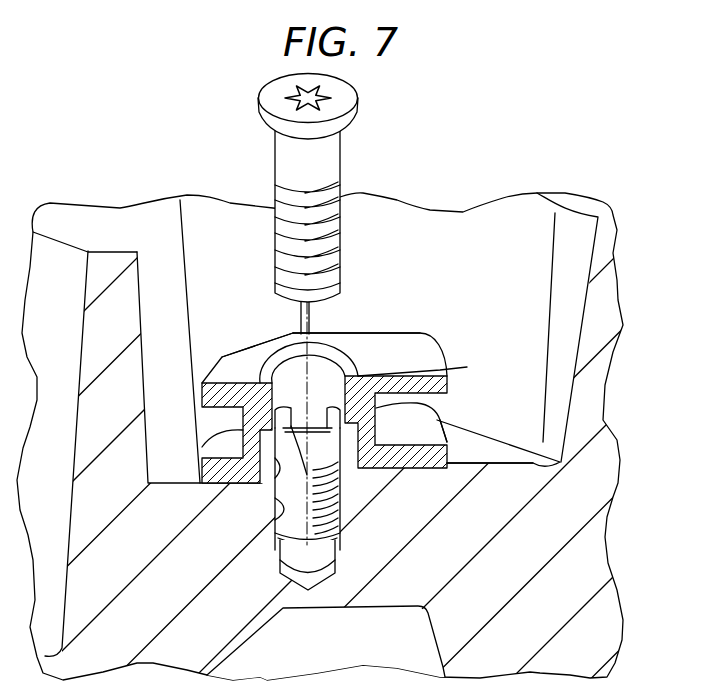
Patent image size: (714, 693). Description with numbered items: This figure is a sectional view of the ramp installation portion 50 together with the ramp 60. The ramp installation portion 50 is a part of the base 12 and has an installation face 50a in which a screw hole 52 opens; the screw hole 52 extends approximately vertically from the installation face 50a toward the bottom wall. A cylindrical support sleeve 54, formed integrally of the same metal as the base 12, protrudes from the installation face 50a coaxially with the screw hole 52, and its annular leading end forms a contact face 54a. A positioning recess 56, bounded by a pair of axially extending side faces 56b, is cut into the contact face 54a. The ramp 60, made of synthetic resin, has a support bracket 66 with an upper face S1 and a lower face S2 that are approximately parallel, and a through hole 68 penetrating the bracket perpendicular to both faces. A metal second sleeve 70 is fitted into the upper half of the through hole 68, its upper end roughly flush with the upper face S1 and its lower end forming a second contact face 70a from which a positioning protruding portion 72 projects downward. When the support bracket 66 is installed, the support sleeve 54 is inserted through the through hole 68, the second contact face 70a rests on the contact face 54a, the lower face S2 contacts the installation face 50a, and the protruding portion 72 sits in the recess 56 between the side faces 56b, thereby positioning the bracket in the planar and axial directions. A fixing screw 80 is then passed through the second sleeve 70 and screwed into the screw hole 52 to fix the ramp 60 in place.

The base 12 is at (160, 243).
The ramp installation portion 50 is at (493, 483).
The installation face 50a is at (470, 447).
The screw hole 52 is at (275, 520).
The support sleeve 54 is at (275, 475).
The contact face 54a is at (428, 407).
The positioning recess 56 is at (288, 431).
The side face 56b is at (435, 368).
The ramp 60 is at (224, 338).
The support bracket 66 is at (393, 350).
The through hole 68 is at (335, 470).
The second sleeve 70 is at (313, 413).
The second contact face 70a is at (262, 438).
The positioning protruding portion 72 is at (320, 370).
The fixing screw 80 is at (342, 107).
The upper face S1 is at (425, 345).
The lower face S2 is at (413, 512).